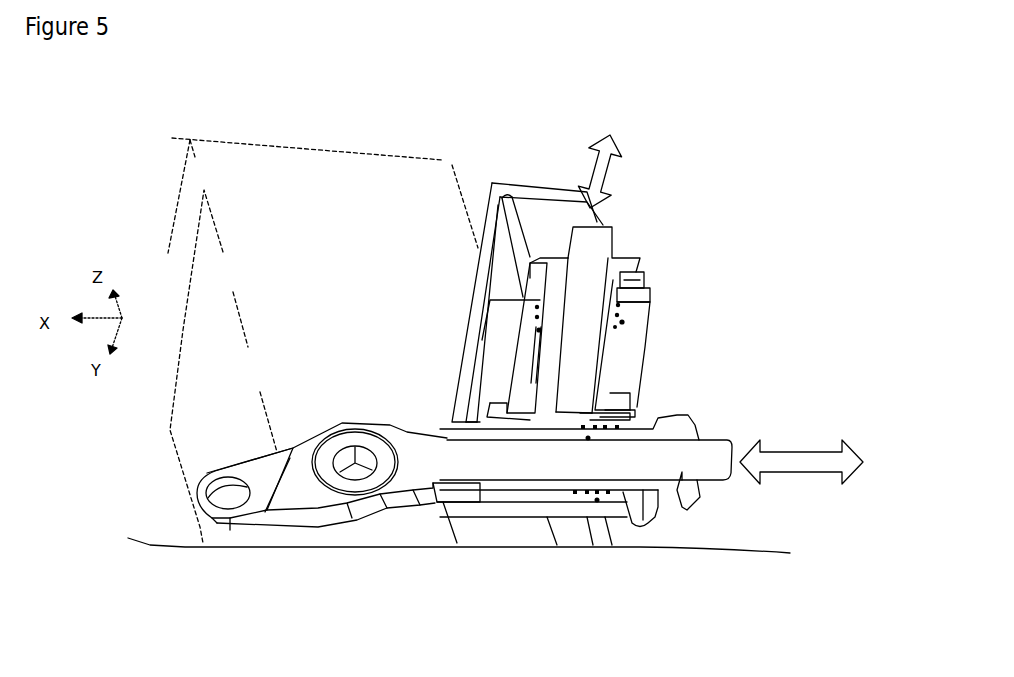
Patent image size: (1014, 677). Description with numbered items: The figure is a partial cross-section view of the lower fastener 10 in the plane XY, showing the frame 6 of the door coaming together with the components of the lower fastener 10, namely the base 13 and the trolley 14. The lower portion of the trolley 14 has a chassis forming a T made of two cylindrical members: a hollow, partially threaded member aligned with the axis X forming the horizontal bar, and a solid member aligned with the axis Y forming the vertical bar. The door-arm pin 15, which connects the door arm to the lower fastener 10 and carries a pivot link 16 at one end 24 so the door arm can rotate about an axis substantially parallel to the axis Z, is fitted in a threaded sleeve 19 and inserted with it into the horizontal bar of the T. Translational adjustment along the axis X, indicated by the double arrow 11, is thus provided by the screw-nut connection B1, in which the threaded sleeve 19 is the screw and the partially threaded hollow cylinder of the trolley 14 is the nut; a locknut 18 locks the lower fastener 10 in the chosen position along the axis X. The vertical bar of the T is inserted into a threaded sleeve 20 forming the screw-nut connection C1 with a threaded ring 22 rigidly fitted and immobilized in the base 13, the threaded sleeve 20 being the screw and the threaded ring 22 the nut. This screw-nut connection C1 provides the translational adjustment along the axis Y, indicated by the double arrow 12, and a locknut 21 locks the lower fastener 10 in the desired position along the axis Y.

The frame 6 is at (547, 187).
The lower fastener 10 is at (758, 318).
The double arrow 11 is at (822, 462).
The double arrow 12 is at (599, 159).
The base 13 is at (500, 330).
The trolley 14 is at (583, 263).
The door-arm pin 15 is at (505, 458).
The pivot link 16 is at (352, 475).
The locknut 18 is at (655, 512).
The threaded sleeve 19 is at (690, 500).
The threaded sleeve 20 is at (622, 272).
The locknut 21 is at (633, 293).
The threaded ring 22 is at (630, 393).
The end 24 is at (242, 533).
The screw-nut connection B1 is at (588, 438).
The screw-nut connection C1 is at (542, 330).